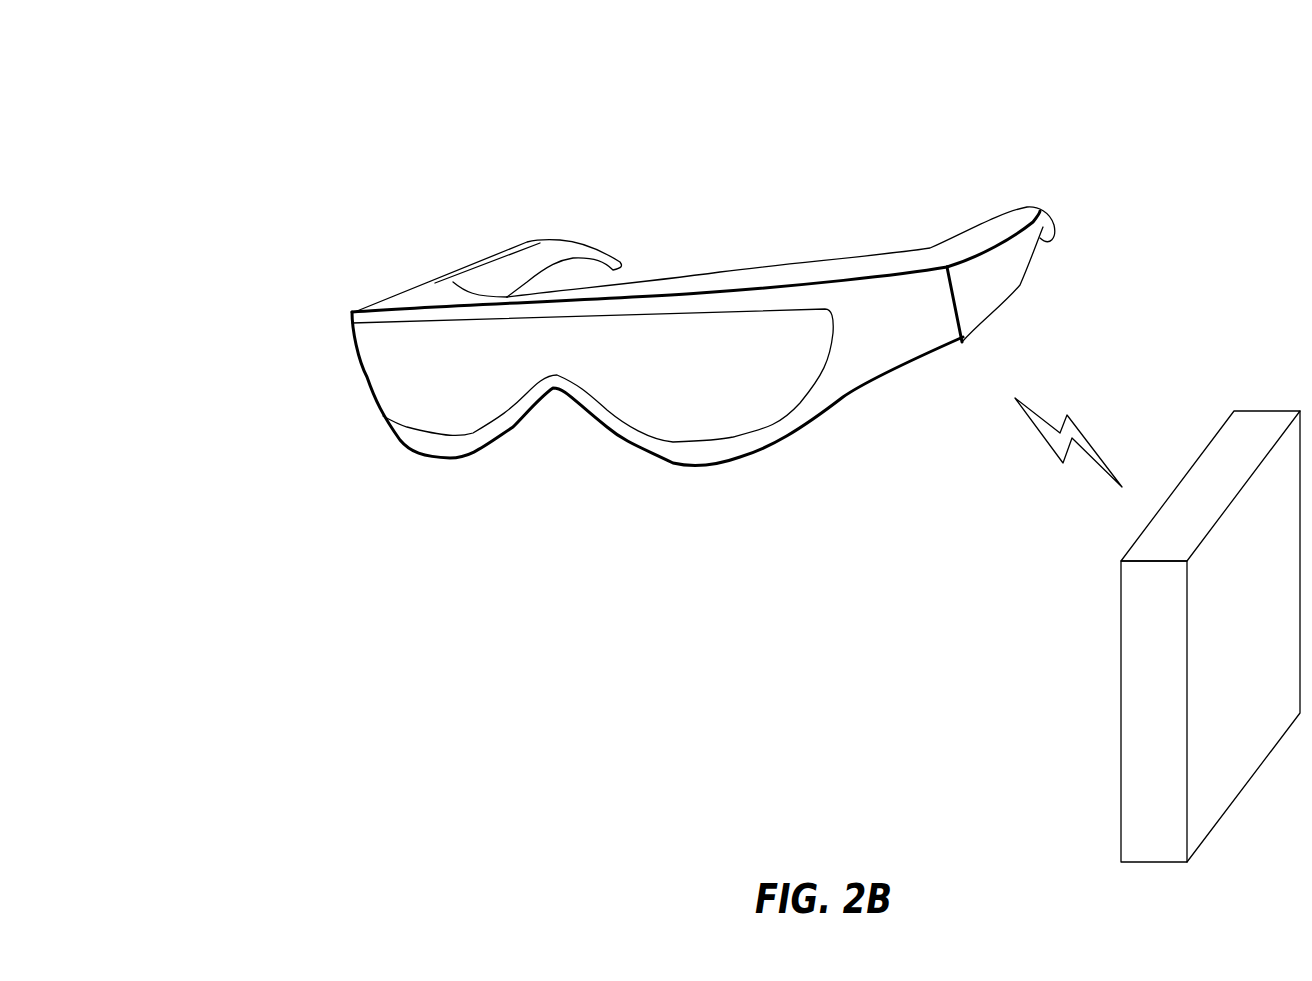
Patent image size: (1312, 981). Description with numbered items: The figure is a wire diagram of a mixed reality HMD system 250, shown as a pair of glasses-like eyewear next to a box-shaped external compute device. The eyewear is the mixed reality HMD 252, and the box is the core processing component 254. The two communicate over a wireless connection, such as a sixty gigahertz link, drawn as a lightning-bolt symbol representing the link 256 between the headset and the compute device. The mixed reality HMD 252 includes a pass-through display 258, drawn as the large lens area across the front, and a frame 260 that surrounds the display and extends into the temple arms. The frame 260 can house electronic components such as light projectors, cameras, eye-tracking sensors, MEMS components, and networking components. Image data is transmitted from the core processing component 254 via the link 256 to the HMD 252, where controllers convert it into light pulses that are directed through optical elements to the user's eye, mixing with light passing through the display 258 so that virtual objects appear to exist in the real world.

The mixed reality HMD system 250 is at (313, 125).
The mixed reality HMD 252 is at (355, 323).
The core processing component 254 is at (1123, 635).
The link 256 is at (1057, 453).
The pass-through display 258 is at (837, 313).
The frame 260 is at (988, 280).